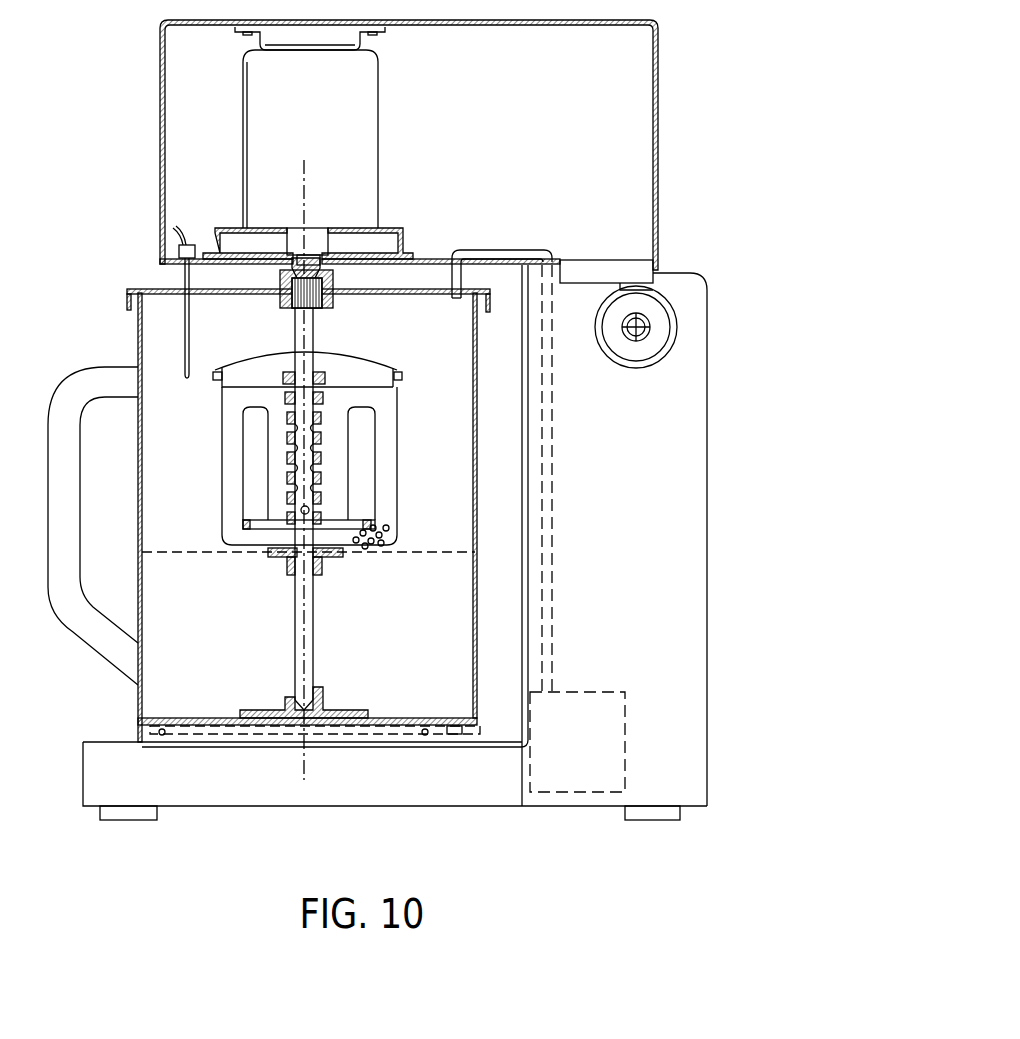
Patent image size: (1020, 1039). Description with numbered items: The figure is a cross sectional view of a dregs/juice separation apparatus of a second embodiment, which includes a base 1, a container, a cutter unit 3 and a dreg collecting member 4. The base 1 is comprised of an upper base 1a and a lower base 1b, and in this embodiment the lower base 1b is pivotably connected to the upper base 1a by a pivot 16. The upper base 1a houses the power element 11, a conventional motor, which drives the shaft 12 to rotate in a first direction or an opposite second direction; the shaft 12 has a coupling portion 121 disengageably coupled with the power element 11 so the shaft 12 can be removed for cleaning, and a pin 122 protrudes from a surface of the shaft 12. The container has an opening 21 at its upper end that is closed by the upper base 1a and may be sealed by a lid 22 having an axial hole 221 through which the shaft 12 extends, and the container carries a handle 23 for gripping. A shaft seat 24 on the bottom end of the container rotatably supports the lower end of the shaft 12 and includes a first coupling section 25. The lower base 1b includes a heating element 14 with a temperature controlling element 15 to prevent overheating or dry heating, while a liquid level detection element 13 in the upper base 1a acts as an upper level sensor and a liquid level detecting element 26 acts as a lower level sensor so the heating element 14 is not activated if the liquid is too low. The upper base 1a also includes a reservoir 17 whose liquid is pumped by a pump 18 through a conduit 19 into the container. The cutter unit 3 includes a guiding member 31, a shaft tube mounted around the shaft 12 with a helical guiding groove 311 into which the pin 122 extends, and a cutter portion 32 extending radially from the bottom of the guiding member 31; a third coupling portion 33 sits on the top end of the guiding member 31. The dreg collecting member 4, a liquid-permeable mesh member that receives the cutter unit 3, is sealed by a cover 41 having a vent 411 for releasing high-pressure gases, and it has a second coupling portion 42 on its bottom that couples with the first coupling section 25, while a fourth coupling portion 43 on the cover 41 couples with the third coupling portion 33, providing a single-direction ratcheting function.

The base 1 is at (410, 447).
The upper base 1a is at (658, 117).
The lower base 1b is at (478, 797).
The power element 11 is at (372, 130).
The shaft 12 is at (300, 330).
The coupling portion 121 is at (290, 262).
The axial hole 221 is at (282, 288).
The liquid level detection element 13 is at (187, 312).
The heating element 14 is at (424, 745).
The temperature controlling element 15 is at (453, 735).
The pivot 16 is at (648, 322).
The reservoir 17 is at (705, 452).
The pump 18 is at (590, 782).
The conduit 19 is at (548, 480).
The opening 21 is at (153, 305).
The lid 22 is at (475, 297).
The handle 23 is at (112, 642).
The shaft seat 24 is at (252, 704).
The first coupling section 25 is at (327, 695).
The liquid level detecting element 26 is at (473, 548).
The cutter unit 3 is at (327, 433).
The guiding member 31 is at (290, 393).
The guiding groove 311 is at (288, 428).
The cutter portion 32 is at (243, 522).
The third coupling portion 33 is at (300, 360).
The dreg collecting member 4 is at (222, 472).
The cover 41 is at (372, 362).
The vent 411 is at (340, 355).
The second coupling portion 42 is at (293, 567).
The fourth coupling portion 43 is at (330, 357).
The pin 122 is at (305, 510).